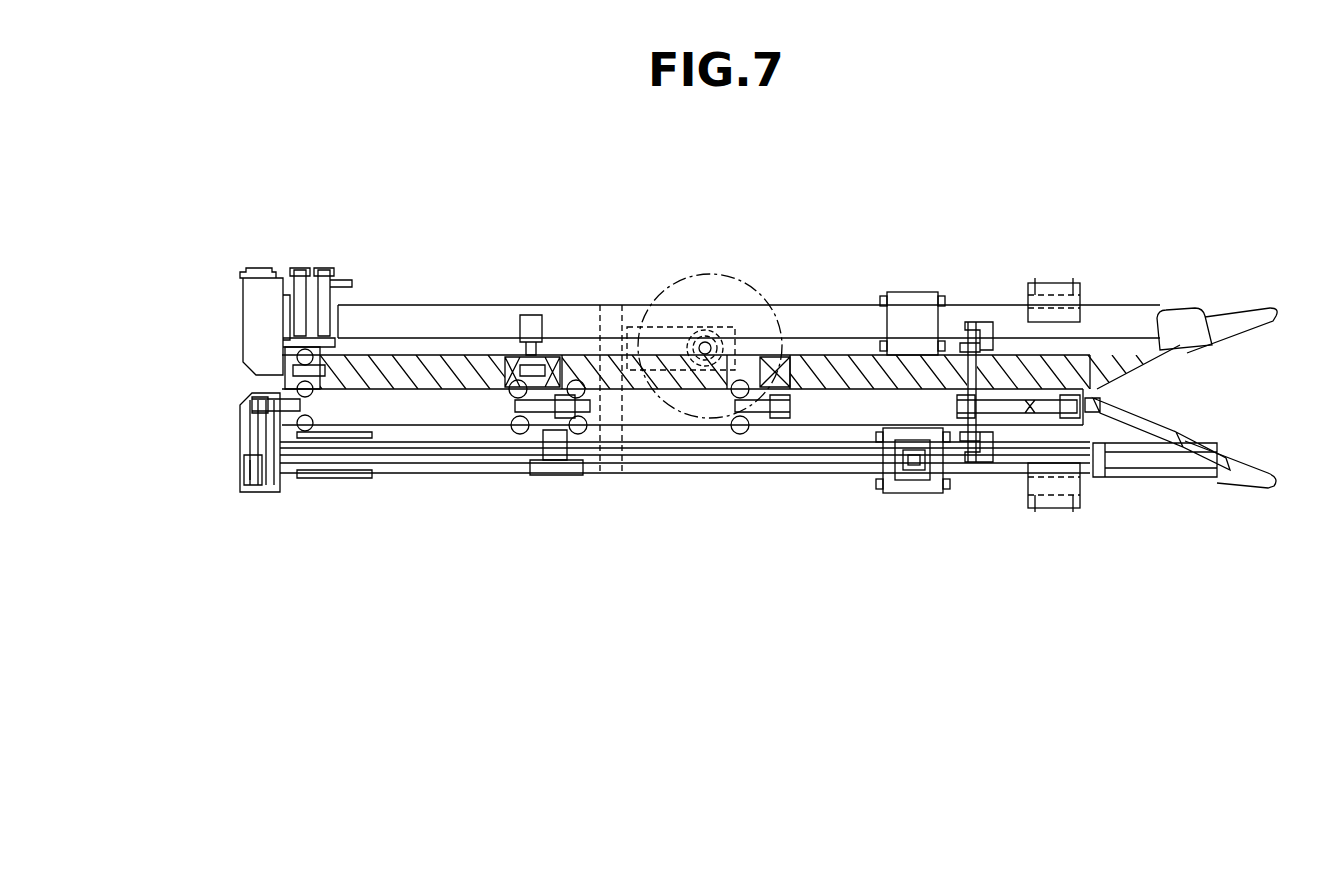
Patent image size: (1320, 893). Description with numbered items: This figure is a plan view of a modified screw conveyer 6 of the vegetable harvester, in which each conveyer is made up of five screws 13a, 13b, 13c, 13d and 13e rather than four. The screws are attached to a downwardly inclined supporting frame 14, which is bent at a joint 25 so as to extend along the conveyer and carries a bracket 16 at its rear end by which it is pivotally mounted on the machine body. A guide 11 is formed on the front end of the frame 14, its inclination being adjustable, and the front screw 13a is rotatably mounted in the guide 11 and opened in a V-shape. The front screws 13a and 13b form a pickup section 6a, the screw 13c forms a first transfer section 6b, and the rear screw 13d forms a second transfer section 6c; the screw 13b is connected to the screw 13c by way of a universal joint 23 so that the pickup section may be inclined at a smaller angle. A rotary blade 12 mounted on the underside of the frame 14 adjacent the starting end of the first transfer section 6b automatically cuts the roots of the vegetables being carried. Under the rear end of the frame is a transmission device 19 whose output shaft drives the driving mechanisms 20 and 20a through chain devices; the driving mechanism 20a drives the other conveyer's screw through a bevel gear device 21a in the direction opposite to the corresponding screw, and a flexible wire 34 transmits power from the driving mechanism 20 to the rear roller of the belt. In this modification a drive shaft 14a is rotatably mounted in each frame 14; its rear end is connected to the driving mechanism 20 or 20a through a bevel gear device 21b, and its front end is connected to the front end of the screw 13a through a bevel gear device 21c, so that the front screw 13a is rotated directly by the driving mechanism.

The screw conveyer 6 is at (1192, 404).
The pickup section 6a is at (982, 90).
The first transfer section 6b is at (791, 95).
The second transfer section 6c is at (294, 57).
The guide 11 is at (1237, 325).
The rotary blade 12 is at (703, 275).
The screw 13a is at (1143, 313).
The screw 13b is at (1018, 375).
The screw 13c is at (835, 355).
The screw 13d is at (648, 370).
The screw 13e is at (425, 350).
The supporting frame 14 is at (487, 305).
The drive shaft 14a is at (687, 465).
The bracket 16 is at (340, 477).
The transmission device 19 is at (335, 278).
The driving mechanism 20 is at (250, 345).
The driving mechanism 20a is at (242, 445).
The bevel gear device 21a is at (240, 405).
The bevel gear device 21b is at (240, 468).
The bevel gear device 21c is at (1175, 475).
The universal joint 23 is at (1083, 440).
The joint 25 is at (913, 305).
The flexible wire 34 is at (250, 265).